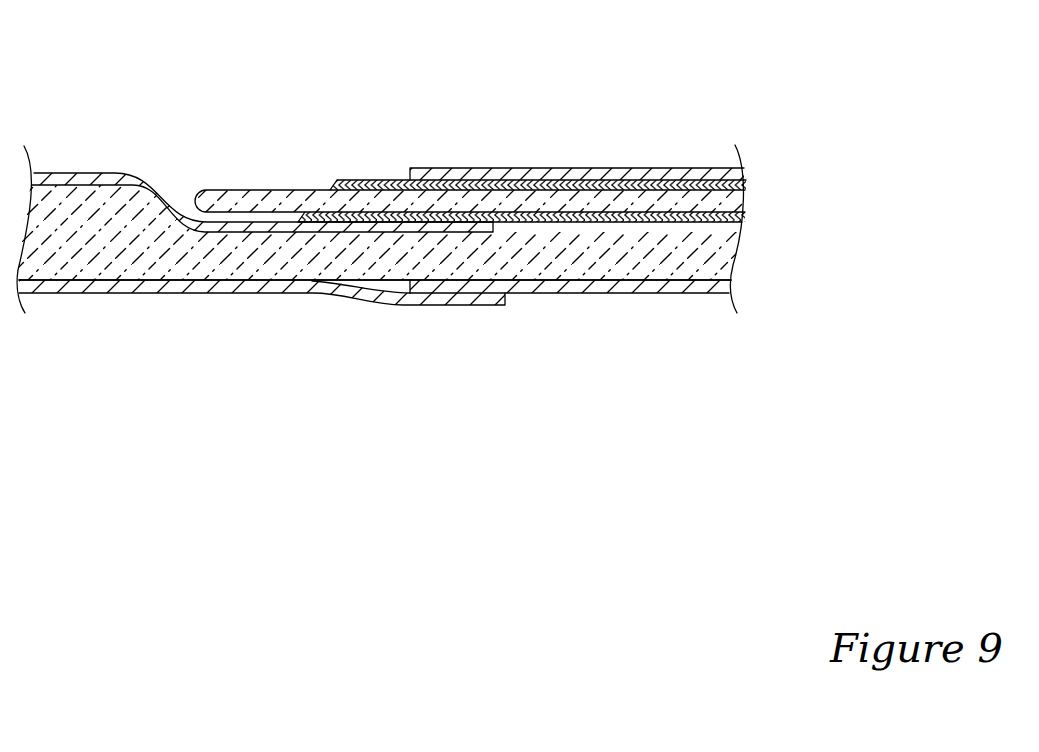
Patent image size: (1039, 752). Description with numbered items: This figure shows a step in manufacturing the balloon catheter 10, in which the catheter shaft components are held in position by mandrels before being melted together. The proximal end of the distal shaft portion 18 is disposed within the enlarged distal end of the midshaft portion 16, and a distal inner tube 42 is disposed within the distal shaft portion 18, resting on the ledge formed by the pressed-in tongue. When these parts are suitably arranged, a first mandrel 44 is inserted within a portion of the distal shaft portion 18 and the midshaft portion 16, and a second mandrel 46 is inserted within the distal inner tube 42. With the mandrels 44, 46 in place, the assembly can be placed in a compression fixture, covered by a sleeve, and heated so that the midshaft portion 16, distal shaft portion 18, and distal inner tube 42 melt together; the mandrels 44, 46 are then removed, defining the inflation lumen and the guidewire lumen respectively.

The medical device assembly 10 is at (430, 57).
The midshaft portion 16 is at (72, 287).
The distal shaft portion 18 is at (677, 287).
The distal inner tube 42 is at (383, 180).
The first mandrel 44 is at (320, 262).
The second mandrel 46 is at (258, 198).